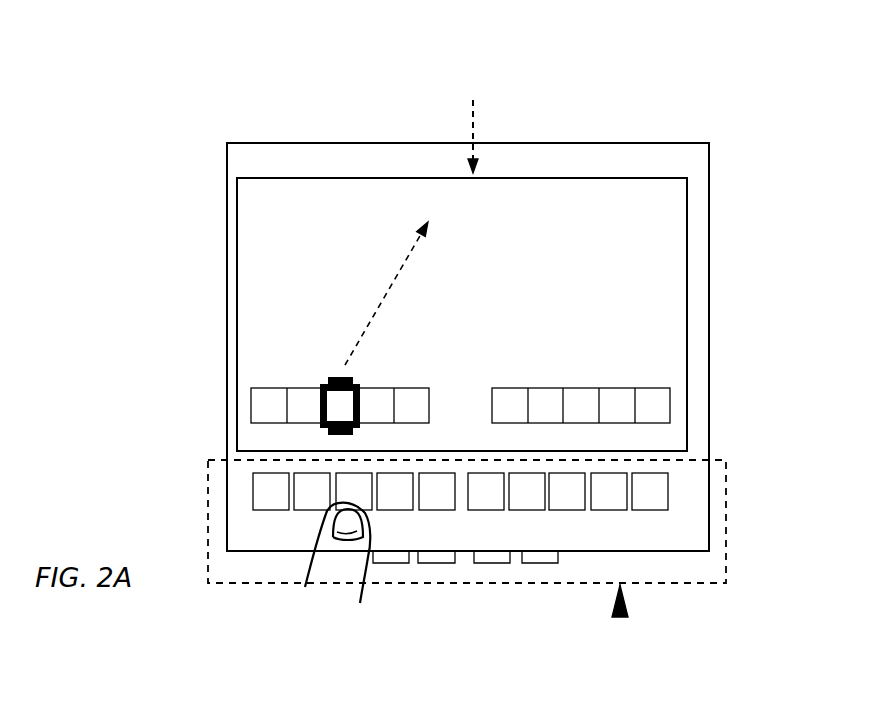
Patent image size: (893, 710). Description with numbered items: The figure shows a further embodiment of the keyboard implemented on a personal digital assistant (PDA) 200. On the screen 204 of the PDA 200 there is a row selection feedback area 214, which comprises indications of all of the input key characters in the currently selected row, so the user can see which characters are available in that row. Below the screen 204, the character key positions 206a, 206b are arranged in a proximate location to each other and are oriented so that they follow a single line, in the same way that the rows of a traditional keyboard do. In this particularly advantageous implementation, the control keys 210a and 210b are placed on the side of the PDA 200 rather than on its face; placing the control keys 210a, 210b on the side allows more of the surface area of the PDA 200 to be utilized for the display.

The personal digital assistant 200 is at (611, 74).
The screen 204 is at (656, 262).
The row selection feedback area 214 is at (251, 403).
The character key position 206a is at (289, 526).
The character key position 206b is at (587, 532).
The control key 210a is at (402, 579).
The control key 210b is at (506, 578).